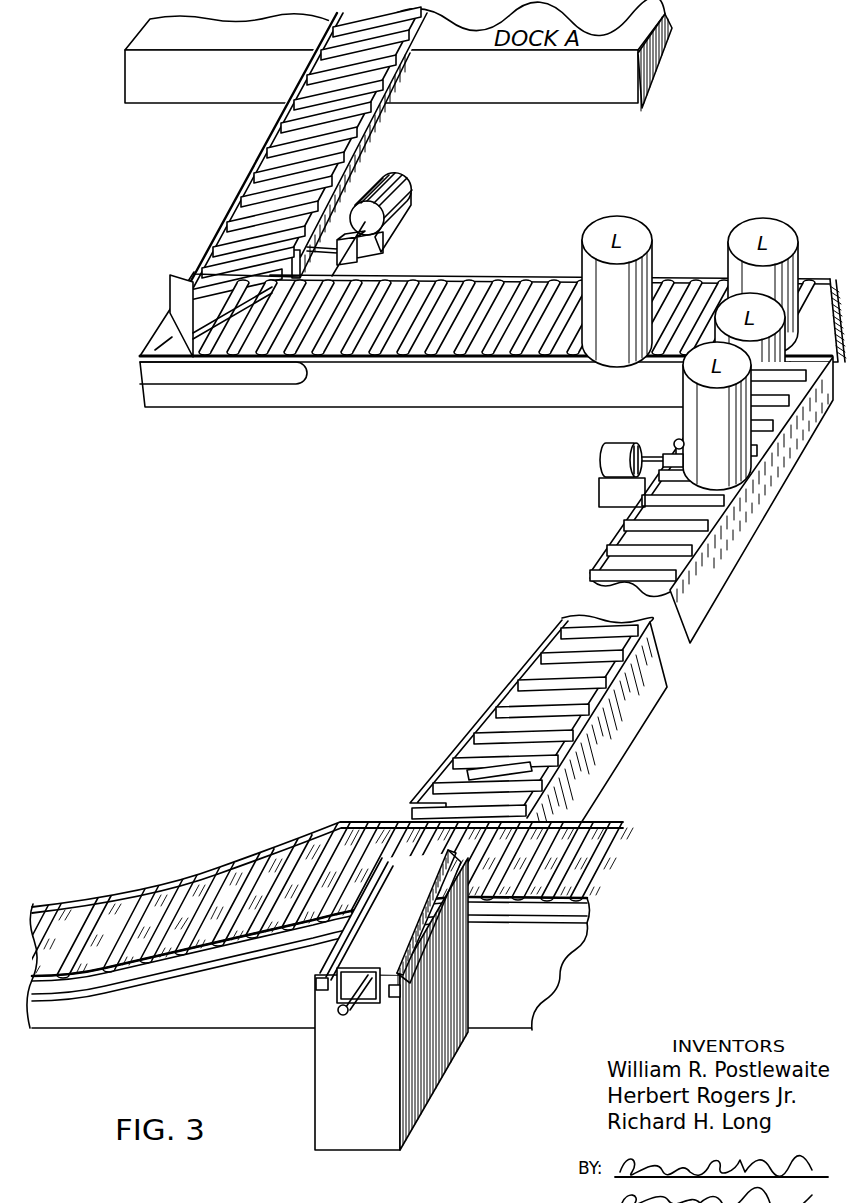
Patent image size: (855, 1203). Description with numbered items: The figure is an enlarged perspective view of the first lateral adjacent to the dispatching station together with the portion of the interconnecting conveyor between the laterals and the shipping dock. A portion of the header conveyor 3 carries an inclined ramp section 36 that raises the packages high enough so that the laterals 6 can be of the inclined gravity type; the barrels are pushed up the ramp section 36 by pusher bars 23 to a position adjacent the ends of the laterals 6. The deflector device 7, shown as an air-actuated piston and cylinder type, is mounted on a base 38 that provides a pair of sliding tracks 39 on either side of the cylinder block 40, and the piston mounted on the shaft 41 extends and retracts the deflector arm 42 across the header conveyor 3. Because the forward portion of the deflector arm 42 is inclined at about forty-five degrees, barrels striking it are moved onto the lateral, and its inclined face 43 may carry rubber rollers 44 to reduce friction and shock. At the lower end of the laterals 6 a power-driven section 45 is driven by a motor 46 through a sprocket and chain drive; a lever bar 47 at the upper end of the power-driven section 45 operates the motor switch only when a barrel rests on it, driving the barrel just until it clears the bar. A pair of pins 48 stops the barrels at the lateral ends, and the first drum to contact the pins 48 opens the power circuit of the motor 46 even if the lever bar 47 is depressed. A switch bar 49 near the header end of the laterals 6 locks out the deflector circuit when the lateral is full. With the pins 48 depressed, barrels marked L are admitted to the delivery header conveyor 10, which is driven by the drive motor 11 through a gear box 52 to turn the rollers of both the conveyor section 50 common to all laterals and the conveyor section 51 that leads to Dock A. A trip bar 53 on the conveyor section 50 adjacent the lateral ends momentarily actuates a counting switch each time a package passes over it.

The header conveyor 3 is at (322, 908).
The laterals 6 is at (537, 747).
The deflector device 7 is at (372, 1116).
The delivery header conveyor 10 is at (493, 302).
The drive motor 11 is at (397, 178).
The pusher bars 23 is at (213, 857).
The inclined ramp section 36 is at (240, 860).
The base 38 is at (368, 1004).
The sliding tracks 39 is at (318, 988).
The cylinder block 40 is at (366, 1003).
The shaft 41 is at (341, 1013).
The deflector arm 42 is at (367, 958).
The inclined face 43 is at (380, 882).
The rubber rollers 44 is at (388, 862).
The power-driven section 45 is at (675, 443).
The motor 46 is at (598, 470).
The lever bar 47 is at (700, 507).
The pins 48 is at (800, 398).
The switch bar 49 is at (469, 768).
The conveyor section 50 is at (512, 396).
The conveyor section 51 is at (256, 180).
The gear box 52 is at (378, 265).
The trip bar 53 is at (680, 292).